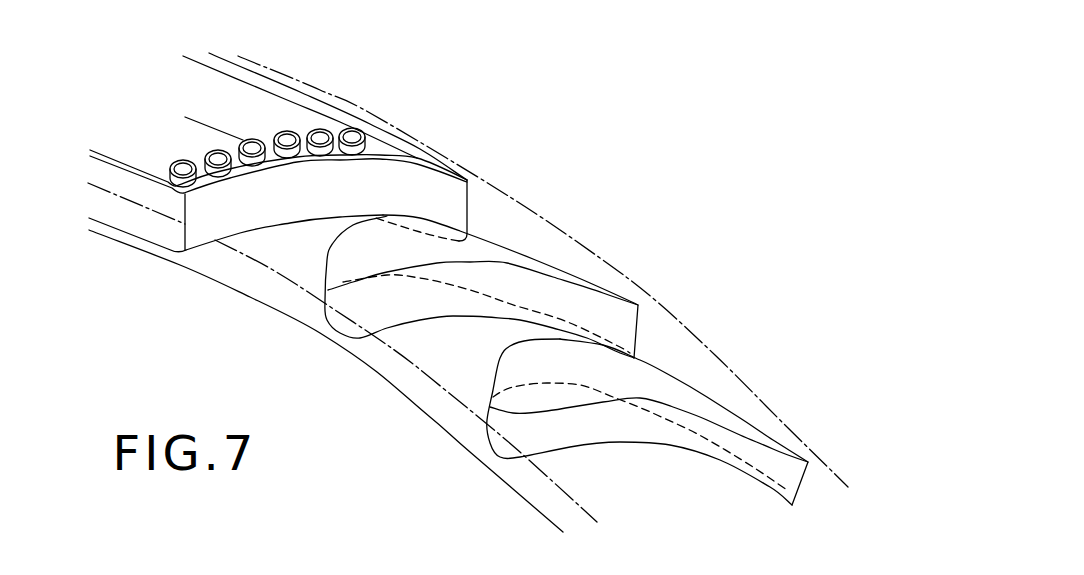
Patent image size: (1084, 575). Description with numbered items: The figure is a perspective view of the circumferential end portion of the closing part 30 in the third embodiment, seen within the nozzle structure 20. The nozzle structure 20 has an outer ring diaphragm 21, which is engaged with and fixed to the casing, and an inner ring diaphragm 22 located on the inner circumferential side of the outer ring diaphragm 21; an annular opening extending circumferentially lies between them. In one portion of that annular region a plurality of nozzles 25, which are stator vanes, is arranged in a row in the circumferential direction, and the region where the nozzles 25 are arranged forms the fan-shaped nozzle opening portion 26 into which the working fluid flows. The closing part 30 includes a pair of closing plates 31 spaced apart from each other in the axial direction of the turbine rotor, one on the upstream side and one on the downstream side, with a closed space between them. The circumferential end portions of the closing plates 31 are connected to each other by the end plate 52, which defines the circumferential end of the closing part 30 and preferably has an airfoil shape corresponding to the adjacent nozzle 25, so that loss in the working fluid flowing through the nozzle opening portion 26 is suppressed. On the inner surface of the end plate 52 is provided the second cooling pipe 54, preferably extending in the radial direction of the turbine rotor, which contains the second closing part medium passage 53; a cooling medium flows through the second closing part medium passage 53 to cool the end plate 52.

The nozzle structure 20 is at (652, 192).
The outer ring diaphragm 21 is at (370, 115).
The inner ring diaphragm 22 is at (253, 300).
The nozzle 25 is at (508, 252).
The nozzle opening portion 26 is at (293, 309).
The closing part 30 is at (137, 235).
The closing plate 31 is at (263, 102).
The end plate 52 is at (223, 217).
The second closing part medium passage 53 is at (183, 168).
The second cooling pipe 54 is at (205, 155).